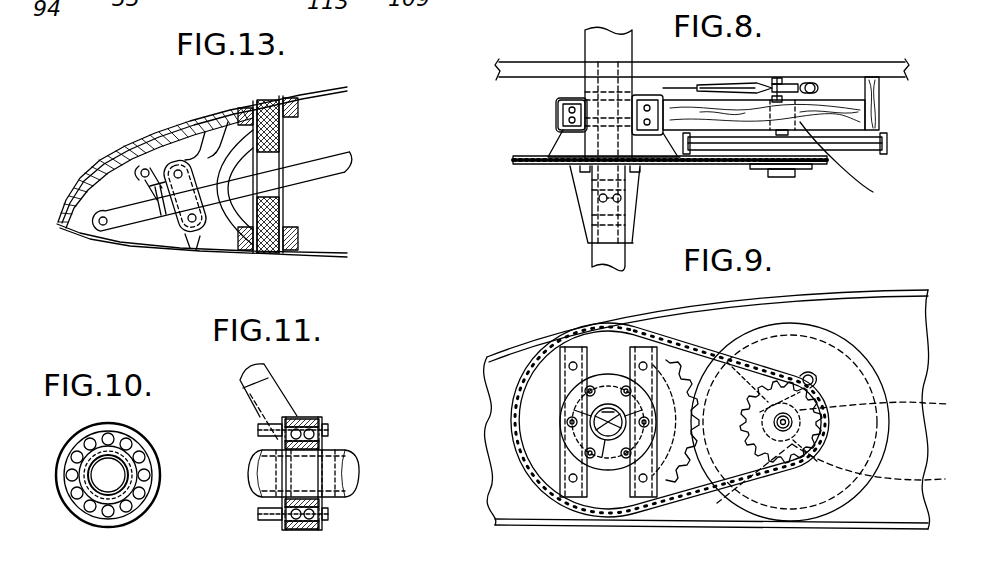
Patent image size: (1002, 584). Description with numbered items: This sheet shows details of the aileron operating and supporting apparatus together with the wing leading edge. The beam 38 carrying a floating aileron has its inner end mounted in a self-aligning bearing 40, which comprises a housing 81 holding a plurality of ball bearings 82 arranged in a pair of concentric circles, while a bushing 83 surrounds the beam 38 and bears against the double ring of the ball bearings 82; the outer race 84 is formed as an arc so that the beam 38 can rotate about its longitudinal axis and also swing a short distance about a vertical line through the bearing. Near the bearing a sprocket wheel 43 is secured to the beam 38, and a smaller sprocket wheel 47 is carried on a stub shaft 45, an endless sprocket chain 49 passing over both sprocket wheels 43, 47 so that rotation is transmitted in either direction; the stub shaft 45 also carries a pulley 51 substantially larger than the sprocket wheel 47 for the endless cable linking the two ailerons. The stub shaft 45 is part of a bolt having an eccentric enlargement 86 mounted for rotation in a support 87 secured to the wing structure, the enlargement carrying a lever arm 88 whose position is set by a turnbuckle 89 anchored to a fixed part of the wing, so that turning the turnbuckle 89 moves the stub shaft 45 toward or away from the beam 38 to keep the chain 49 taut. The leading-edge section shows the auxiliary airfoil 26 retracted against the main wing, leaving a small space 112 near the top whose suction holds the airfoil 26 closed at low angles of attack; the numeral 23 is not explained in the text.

In FIG. 13, the wing spar 23 is at (293, 86).
In FIG. 13, the auxiliary airfoil 26 is at (94, 166).
In FIG. 13, the space 112 is at (198, 117).
In FIG. 10, the beam 38 is at (132, 492).
In FIG. 11, the beam 38 is at (352, 468).
In FIG. 8, the beam 38 is at (597, 66).
In FIG. 8, the self-aligning bearing 40 is at (514, 120).
In FIG. 10, the housing 81 is at (151, 450).
In FIG. 8, the housing 81 is at (562, 107).
In FIG. 10, the ball bearings 82 is at (150, 470).
In FIG. 11, the ball bearings 82 is at (303, 419).
In FIG. 8, the ball bearings 82 is at (573, 117).
In FIG. 11, the bushing 83 is at (340, 457).
In FIG. 11, the outer race 84 is at (305, 531).
In FIG. 9, the sprocket wheel 43 is at (537, 427).
In FIG. 8, the stub shaft 45 is at (785, 178).
In FIG. 8, the sprocket wheel 47 is at (808, 169).
In FIG. 8, the sprocket chain 49 is at (702, 167).
In FIG. 9, the sprocket chain 49 is at (667, 340).
In FIG. 8, the pulley 51 is at (880, 153).
In FIG. 9, the pulley 51 is at (848, 382).
In FIG. 8, the eccentric enlargement 86 is at (850, 166).
In FIG. 9, the eccentric enlargement 86 is at (846, 473).
In FIG. 8, the support 87 is at (877, 107).
In FIG. 8, the lever arm 88 is at (817, 87).
In FIG. 9, the lever arm 88 is at (889, 401).
In FIG. 8, the turnbuckle 89 is at (748, 87).